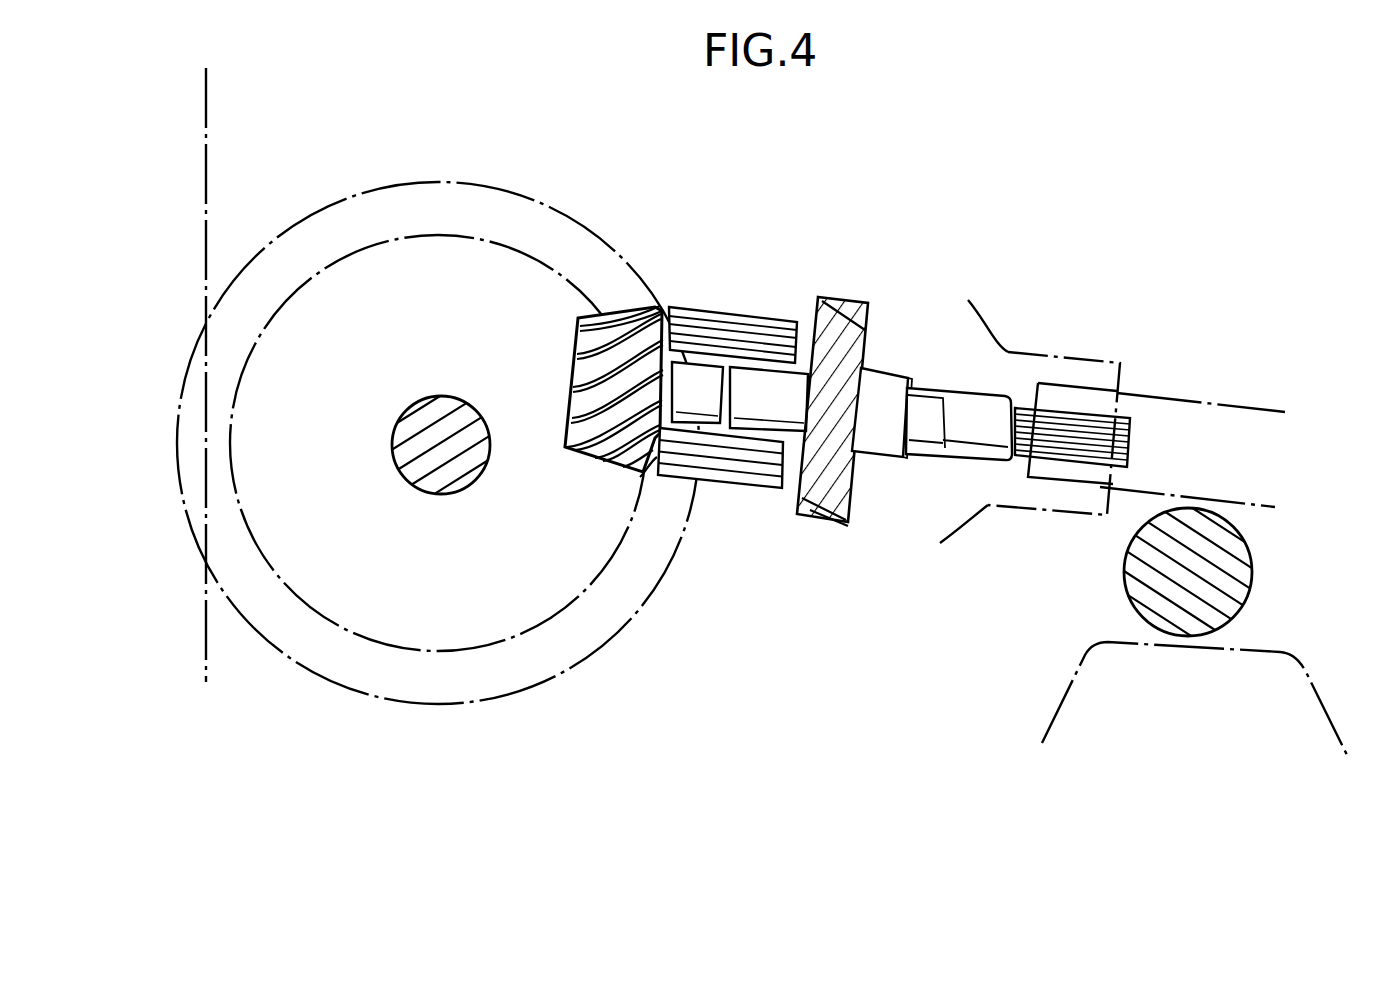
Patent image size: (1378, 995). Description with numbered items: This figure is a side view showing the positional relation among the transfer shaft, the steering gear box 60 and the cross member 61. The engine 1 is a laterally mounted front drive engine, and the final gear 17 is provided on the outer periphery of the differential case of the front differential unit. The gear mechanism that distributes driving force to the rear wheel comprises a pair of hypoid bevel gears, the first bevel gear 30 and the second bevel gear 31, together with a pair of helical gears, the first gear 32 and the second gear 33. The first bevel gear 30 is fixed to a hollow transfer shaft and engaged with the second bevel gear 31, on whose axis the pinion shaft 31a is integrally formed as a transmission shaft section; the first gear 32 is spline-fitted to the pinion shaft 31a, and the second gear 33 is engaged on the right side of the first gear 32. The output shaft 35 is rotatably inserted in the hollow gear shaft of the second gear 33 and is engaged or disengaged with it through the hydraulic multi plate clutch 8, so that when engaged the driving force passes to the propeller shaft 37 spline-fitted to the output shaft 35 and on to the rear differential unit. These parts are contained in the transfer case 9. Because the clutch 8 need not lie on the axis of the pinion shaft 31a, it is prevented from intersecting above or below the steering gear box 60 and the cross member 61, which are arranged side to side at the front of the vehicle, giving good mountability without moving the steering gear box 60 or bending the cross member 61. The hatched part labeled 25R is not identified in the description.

The engine 1 is at (207, 110).
The final gear 17 is at (446, 180).
The first bevel gear 30 is at (492, 232).
The rear axle 25R is at (437, 398).
The second bevel gear 31 is at (594, 455).
The hydraulic multi plate clutch 8 is at (737, 328).
The pinion shaft 31a is at (757, 430).
The second gear 33 is at (838, 300).
The first gear 32 is at (868, 335).
The output shaft 35 is at (968, 403).
The propeller shaft 37 is at (1235, 403).
The transfer case 9 is at (1065, 355).
The steering gear box 60 is at (1250, 570).
The cross member 61 is at (1305, 680).